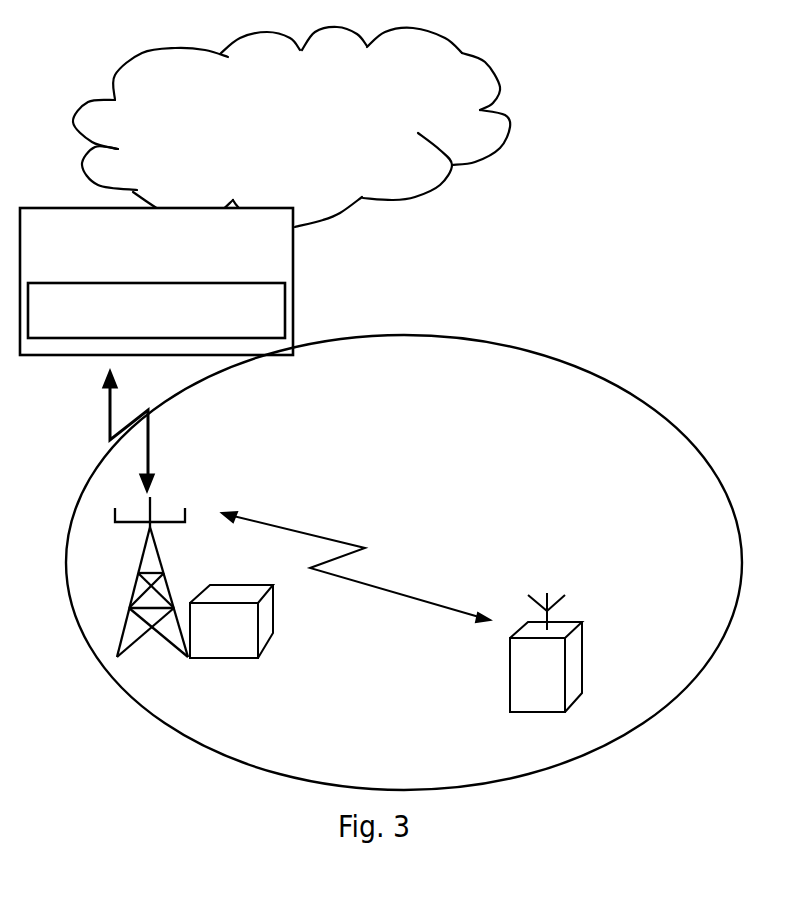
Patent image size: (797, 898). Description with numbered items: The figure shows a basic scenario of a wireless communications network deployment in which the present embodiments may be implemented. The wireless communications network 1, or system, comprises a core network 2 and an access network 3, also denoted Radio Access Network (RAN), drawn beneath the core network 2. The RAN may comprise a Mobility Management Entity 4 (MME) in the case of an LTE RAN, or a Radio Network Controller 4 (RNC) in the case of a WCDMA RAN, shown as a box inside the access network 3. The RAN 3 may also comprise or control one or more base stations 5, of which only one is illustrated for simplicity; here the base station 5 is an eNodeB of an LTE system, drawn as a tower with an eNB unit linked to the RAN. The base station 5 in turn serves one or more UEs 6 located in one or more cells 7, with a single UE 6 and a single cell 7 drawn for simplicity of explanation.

The wireless communications network 1 is at (719, 47).
The core network 2 is at (175, 104).
The access network 3 is at (50, 250).
The Mobility Management Entity 4 is at (58, 325).
The base station 5 is at (273, 637).
The UE 6 is at (593, 682).
The cell 7 is at (520, 430).